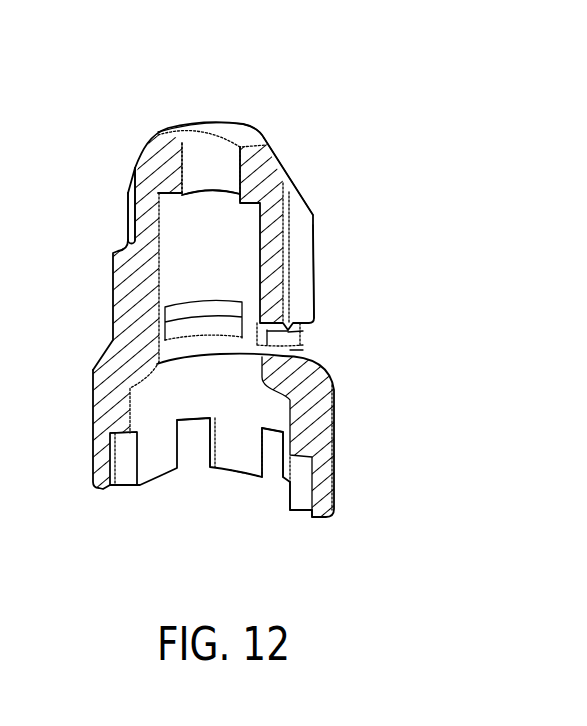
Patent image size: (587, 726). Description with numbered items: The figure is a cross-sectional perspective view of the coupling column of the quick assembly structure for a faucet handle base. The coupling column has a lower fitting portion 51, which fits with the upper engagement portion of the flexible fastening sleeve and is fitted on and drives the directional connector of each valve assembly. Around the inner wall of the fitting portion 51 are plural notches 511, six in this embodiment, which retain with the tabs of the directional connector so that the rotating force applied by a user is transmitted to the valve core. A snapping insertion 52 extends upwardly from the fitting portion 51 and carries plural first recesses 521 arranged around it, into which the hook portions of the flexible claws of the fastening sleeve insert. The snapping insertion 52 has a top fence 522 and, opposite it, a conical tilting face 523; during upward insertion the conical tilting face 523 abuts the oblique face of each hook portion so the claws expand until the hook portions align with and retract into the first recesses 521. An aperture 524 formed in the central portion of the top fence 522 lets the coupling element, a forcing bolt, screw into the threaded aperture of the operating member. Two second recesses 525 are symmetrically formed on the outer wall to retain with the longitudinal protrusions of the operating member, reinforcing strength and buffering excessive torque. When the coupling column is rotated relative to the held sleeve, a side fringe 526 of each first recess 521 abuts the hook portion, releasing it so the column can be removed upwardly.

The fitting portion 51 is at (332, 442).
The notches 511 is at (130, 470).
The snapping insertion 52 is at (313, 277).
The first recesses 521 is at (193, 327).
The top fence 522 is at (209, 145).
The conical tilting face 523 is at (282, 170).
The aperture 524 is at (250, 137).
The second recesses 525 is at (132, 213).
The side fringe 526 is at (290, 332).